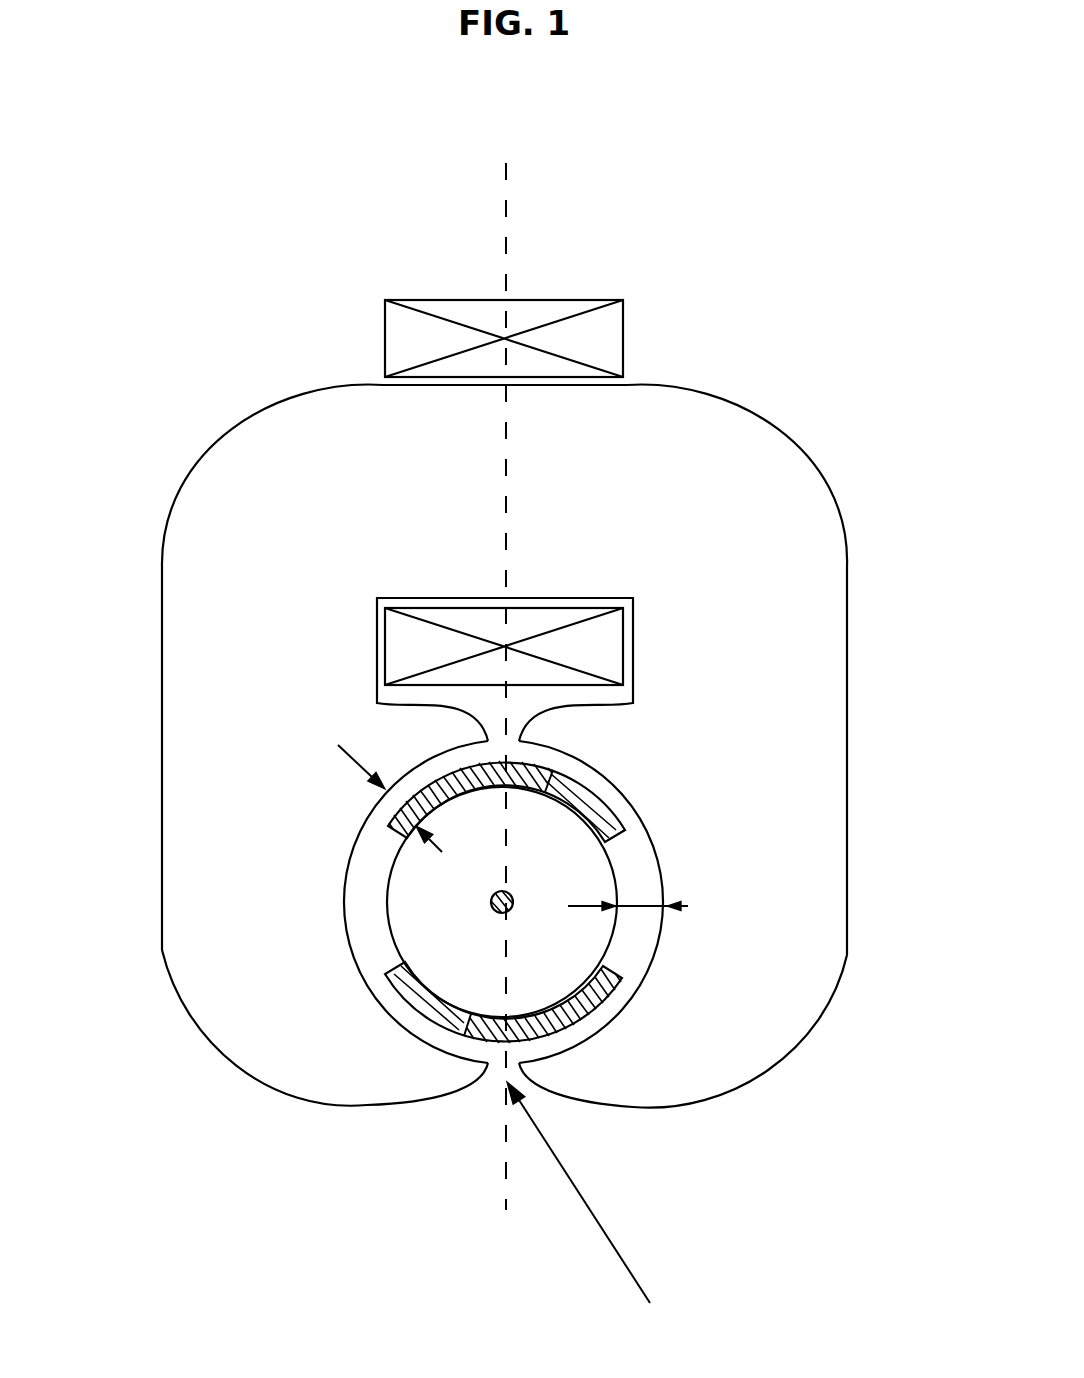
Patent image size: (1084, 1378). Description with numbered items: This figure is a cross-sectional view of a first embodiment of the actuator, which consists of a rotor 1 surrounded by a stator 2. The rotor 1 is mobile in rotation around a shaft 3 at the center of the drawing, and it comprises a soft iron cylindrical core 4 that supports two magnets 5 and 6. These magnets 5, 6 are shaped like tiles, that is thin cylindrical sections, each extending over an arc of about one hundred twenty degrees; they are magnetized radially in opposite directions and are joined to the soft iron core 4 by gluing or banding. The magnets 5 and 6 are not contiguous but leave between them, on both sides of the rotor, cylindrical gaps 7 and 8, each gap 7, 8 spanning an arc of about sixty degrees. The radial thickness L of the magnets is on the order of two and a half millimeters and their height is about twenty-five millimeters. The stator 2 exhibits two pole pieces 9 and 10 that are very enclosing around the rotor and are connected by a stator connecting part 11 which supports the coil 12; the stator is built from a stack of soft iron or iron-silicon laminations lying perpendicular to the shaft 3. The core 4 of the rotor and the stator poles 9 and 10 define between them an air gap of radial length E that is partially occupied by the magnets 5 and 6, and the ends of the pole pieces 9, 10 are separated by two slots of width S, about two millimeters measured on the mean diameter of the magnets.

The rotor 1 is at (578, 887).
The stator 2 is at (182, 371).
The shaft 3 is at (512, 893).
The soft iron cylindrical core 4 is at (423, 926).
The magnet 5 is at (552, 783).
The magnet 6 is at (465, 1023).
The cylindrical gap 7 is at (370, 875).
The cylindrical gap 8 is at (630, 953).
The pole piece 9 is at (617, 1040).
The pole piece 10 is at (267, 1023).
The stator connecting part 11 is at (542, 558).
The coil 12 is at (590, 340).